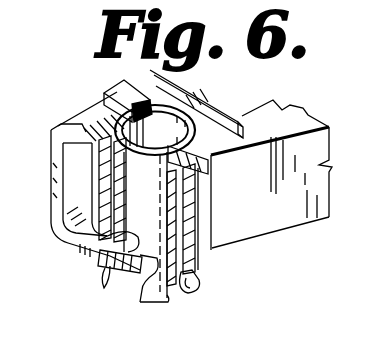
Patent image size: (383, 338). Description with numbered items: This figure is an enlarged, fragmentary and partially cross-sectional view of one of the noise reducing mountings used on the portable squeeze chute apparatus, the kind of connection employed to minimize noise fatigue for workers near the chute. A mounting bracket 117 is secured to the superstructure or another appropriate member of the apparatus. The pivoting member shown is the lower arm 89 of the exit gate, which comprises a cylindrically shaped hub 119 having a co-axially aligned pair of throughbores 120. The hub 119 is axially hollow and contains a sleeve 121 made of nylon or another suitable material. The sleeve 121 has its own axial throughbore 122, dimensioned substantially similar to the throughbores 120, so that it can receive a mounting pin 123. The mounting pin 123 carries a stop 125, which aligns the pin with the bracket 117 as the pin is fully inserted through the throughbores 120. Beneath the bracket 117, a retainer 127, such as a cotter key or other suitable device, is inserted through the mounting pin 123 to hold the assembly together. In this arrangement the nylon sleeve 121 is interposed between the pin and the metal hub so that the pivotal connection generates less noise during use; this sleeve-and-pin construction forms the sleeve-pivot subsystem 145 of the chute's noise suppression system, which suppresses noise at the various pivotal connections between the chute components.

The lower arm 89 is at (256, 236).
The mounting bracket 117 is at (48, 133).
The hub 119 is at (199, 242).
The throughbores 120 is at (214, 114).
The sleeve 121 is at (177, 200).
The axial throughbore 122 is at (112, 261).
The mounting pin 123 is at (161, 300).
The stop 125 is at (106, 91).
The retainer 127 is at (200, 291).
The sleeve-pivot subsystem 145 is at (181, 214).